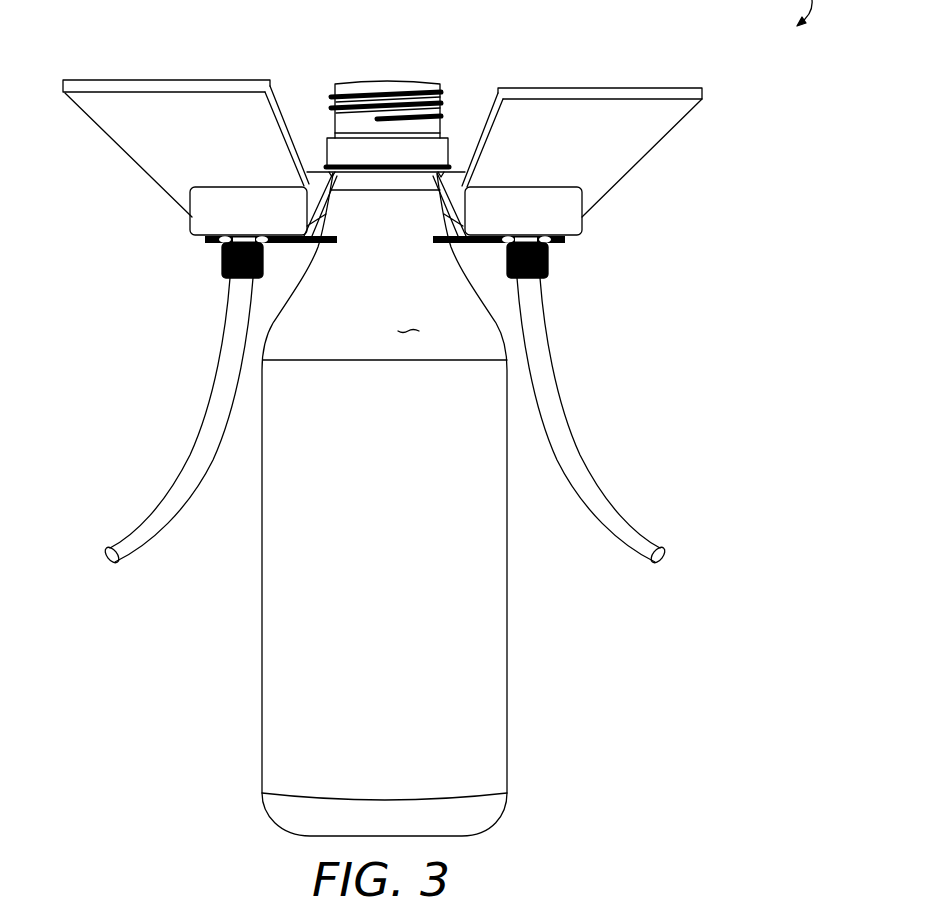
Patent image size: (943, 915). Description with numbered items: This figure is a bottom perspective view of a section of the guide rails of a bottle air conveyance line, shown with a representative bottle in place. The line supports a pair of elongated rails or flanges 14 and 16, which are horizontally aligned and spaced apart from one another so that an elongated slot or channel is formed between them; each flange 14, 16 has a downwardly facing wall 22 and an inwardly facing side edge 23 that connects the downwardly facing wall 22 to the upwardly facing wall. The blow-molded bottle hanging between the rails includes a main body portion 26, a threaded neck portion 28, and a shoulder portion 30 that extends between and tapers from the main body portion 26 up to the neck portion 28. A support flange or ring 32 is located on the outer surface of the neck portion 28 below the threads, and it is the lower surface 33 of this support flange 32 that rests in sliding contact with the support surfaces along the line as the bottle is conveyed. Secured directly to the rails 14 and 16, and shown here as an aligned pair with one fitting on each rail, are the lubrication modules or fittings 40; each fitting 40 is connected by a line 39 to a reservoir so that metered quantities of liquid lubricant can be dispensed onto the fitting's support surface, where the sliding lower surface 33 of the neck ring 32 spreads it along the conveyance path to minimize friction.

The rail or flange 14 is at (281, 90).
The rail or flange 16 is at (670, 89).
The downwardly facing wall 22 is at (118, 125).
The inwardly facing side edge 23 is at (282, 118).
The main body portion 26 is at (300, 455).
The threaded neck portion 28 is at (360, 92).
The shoulder portion 30 is at (303, 268).
The support flange or ring 32 is at (438, 157).
The lower surface of the support flange 33 is at (437, 173).
The line 39 is at (187, 498).
The lubrication module or fitting 40 is at (220, 219).